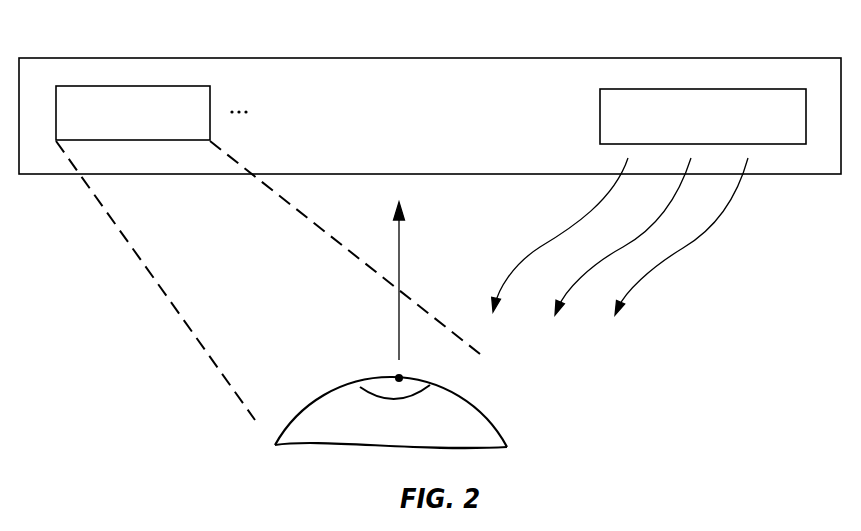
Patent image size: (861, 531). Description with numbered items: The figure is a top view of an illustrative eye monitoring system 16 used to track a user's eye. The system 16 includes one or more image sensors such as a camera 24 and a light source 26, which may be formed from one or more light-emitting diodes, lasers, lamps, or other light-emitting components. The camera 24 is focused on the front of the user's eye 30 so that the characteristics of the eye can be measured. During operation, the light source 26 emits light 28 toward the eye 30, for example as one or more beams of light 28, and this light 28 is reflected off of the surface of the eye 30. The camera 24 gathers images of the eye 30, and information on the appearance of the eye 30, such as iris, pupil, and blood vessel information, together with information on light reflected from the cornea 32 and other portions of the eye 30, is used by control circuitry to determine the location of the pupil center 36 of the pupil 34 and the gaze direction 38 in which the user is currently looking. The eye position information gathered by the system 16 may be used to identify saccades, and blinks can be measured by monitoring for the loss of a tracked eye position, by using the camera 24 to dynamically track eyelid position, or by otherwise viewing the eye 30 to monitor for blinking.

The eye monitoring system 16 is at (575, 57).
The camera 24 is at (210, 102).
The light source 26 is at (776, 89).
The light 28 is at (623, 247).
The eye 30 is at (416, 385).
The cornea 32 is at (453, 413).
The pupil 34 is at (413, 390).
The pupil center 36 is at (395, 376).
The gaze direction 38 is at (399, 243).